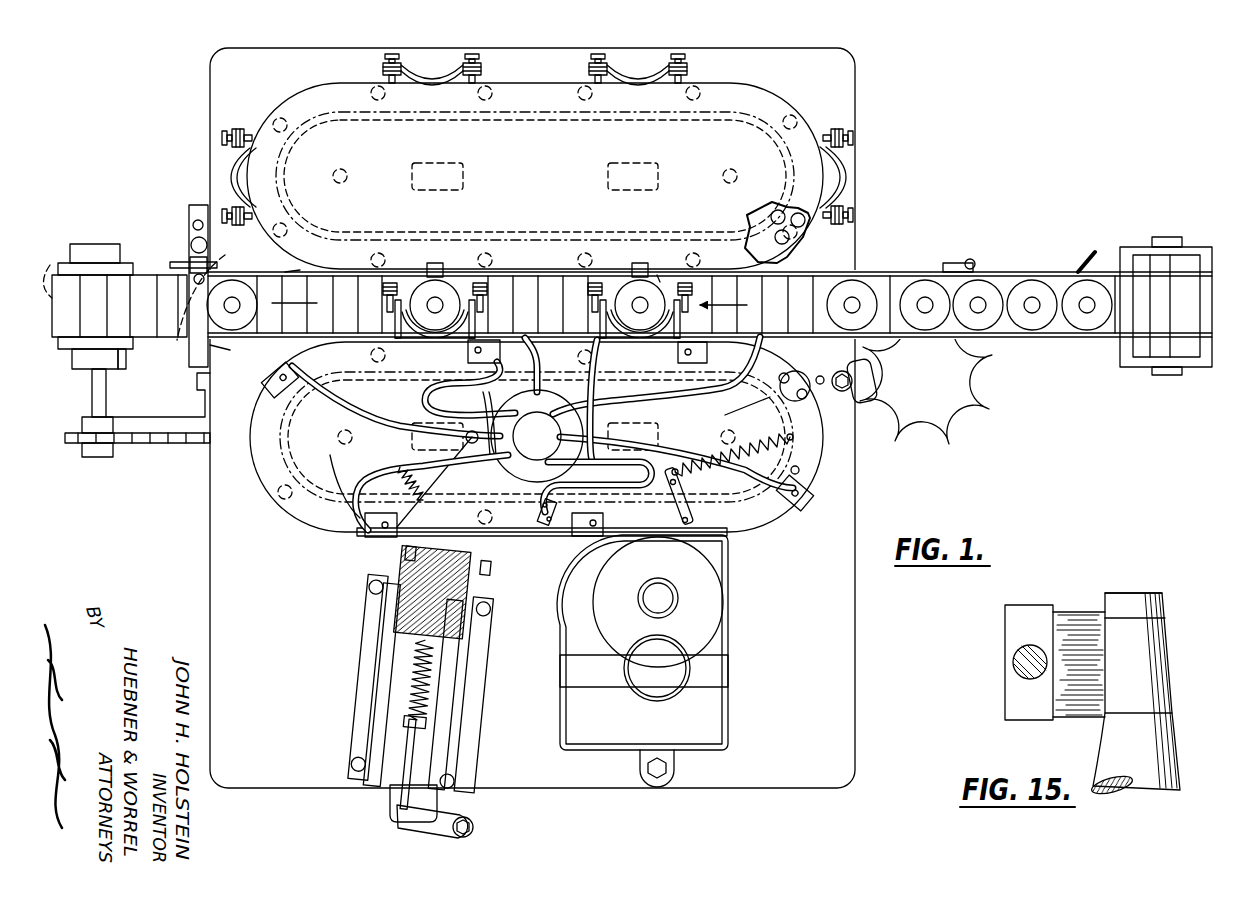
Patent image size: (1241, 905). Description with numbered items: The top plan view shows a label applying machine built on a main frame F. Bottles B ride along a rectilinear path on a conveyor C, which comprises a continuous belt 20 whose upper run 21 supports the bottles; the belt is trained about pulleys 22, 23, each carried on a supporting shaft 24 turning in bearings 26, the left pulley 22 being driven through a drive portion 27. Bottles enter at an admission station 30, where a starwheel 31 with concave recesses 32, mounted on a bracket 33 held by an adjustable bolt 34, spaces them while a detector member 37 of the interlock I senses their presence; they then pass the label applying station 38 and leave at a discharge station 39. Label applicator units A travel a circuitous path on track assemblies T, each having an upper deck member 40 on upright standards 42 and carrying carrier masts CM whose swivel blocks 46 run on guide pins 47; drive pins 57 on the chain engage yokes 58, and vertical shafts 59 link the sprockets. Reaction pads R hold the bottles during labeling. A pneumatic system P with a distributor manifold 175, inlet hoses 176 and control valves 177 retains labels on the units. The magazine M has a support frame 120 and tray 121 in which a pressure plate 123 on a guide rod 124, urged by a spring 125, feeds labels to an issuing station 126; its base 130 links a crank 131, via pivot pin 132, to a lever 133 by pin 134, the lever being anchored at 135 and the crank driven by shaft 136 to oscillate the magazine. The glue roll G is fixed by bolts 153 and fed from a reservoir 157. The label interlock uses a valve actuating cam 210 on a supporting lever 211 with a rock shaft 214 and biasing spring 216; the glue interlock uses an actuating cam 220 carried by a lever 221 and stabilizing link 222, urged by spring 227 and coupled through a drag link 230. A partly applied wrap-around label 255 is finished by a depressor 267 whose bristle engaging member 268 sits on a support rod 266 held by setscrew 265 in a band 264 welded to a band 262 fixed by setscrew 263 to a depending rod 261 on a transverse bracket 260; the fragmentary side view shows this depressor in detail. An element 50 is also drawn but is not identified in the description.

In FIG. 1, the continuous belt 20 is at (170, 290).
In FIG. 1, the upper run 21 is at (766, 313).
In FIG. 1, the pulley 22 is at (48, 271).
In FIG. 1, the pulley 23 is at (1212, 296).
In FIG. 1, the supporting shaft 24 is at (1168, 240).
In FIG. 1, the bearings 26 is at (124, 353).
In FIG. 1, the drive means portion 27 is at (126, 443).
In FIG. 1, the bottle admission station 30 is at (1002, 345).
In FIG. 1, the starwheel 31 is at (960, 422).
In FIG. 1, the peripheral concave recesses 32 is at (917, 436).
In FIG. 1, the bracket 33 is at (866, 384).
In FIG. 1, the bolt 34 is at (842, 395).
In FIG. 1, the detector member 37 is at (1080, 258).
In FIG. 1, the label applying station 38 is at (724, 288).
In FIG. 1, the discharge station 39 is at (50, 318).
In FIG. 1, the upper deck member 40 is at (300, 520).
In FIG. 1, the upright standards 42 is at (420, 398).
In FIG. 1, the swivel blocks 46 is at (794, 380).
In FIG. 1, the guide pins 47 is at (822, 377).
In FIG. 1, the mounting hole 50 is at (378, 348).
In FIG. 1, the drive pins 57 is at (770, 397).
In FIG. 1, the yoke 58 is at (772, 410).
In FIG. 1, the vertical shafts 59 is at (340, 434).
In FIG. 1, the main support frame 120 is at (468, 712).
In FIG. 1, the label receiving tray 121 is at (400, 664).
In FIG. 1, the pressure plate 123 is at (450, 644).
In FIG. 1, the guide rod 124 is at (420, 762).
In FIG. 1, the spring 125 is at (412, 700).
In FIG. 1, the issuing station 126 is at (378, 549).
In FIG. 1, the rigid base 130 is at (375, 785).
In FIG. 1, the crank 131 is at (388, 577).
In FIG. 1, the pivot pin 132 is at (470, 574).
In FIG. 1, the lever 133 is at (437, 832).
In FIG. 1, the pin 134 is at (392, 812).
In FIG. 1, the pivot anchorage 135 is at (475, 827).
In FIG. 1, the shaft 136 is at (462, 622).
In FIG. 1, the bolts 153 is at (657, 778).
In FIG. 1, the reservoir 157 is at (708, 727).
In FIG. 1, the distributor manifold 175 is at (538, 385).
In FIG. 1, the inlet hoses 176 is at (450, 408).
In FIG. 1, the control valves 177 is at (266, 394).
In FIG. 1, the valve actuating cam 210 is at (328, 477).
In FIG. 1, the supporting lever 211 is at (373, 468).
In FIG. 1, the second rock shaft 214 is at (483, 518).
In FIG. 1, the biasing spring 216 is at (400, 457).
In FIG. 1, the actuating cam 220 is at (640, 535).
In FIG. 1, the lever 221 is at (700, 500).
In FIG. 1, the stabilizing link 222 is at (470, 445).
In FIG. 1, the biasing spring 227 is at (800, 473).
In FIG. 1, the drag link 230 is at (625, 528).
In FIG. 1, the wrap-around label 255 is at (657, 275).
In FIG. 15, the wrap-around label 255 is at (1170, 640).
In FIG. 1, the transverse bracket 260 is at (197, 197).
In FIG. 1, the depending rod 261 is at (205, 243).
In FIG. 1, the annular mounting band 262 is at (196, 236).
In FIG. 1, the setscrew 263 is at (196, 220).
In FIG. 1, the annular mounting band 264 is at (182, 313).
In FIG. 1, the adjustable setscrew 265 is at (218, 346).
In FIG. 1, the rigid support rod 266 is at (285, 272).
In FIG. 15, the rigid support rod 266 is at (1018, 666).
In FIG. 1, the resilient depressor 267 is at (447, 273).
In FIG. 15, the resilient depressor 267 is at (1022, 605).
In FIG. 1, the flexible label engaging member 268 is at (418, 275).
In FIG. 15, the flexible label engaging member 268 is at (1082, 615).
In FIG. 1, the label applicator units A is at (482, 325).
In FIG. 1, the bottles B is at (222, 272).
In FIG. 15, the bottles B is at (1160, 600).
In FIG. 1, the conveyor C is at (143, 272).
In FIG. 1, the carrier masts CM is at (285, 495).
In FIG. 1, the main frame F is at (207, 584).
In FIG. 1, the glue dispensing roll G is at (722, 592).
In FIG. 1, the interlock I is at (976, 261).
In FIG. 1, the magazine M is at (427, 694).
In FIG. 1, the pneumatic system P is at (530, 447).
In FIG. 1, the reaction pads R is at (584, 64).
In FIG. 1, the track assemblies T is at (793, 99).